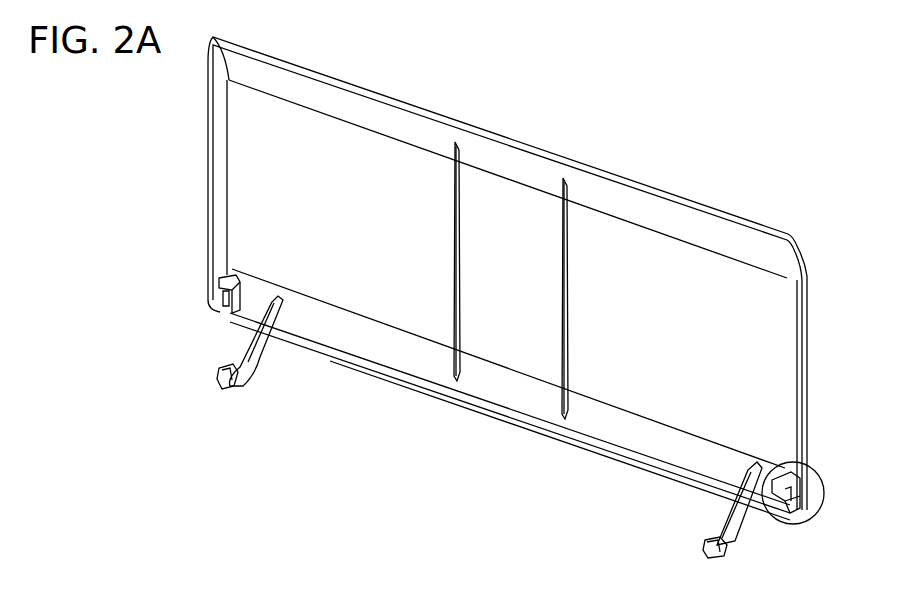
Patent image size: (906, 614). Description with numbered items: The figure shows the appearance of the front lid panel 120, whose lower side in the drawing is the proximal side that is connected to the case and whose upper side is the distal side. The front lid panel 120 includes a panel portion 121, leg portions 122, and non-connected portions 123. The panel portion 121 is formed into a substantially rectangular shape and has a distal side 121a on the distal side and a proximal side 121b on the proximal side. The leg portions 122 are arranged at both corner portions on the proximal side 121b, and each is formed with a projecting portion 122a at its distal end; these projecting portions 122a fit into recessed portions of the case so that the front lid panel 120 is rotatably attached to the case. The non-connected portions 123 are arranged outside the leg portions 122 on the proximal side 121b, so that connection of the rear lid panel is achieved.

The front lid panel 120 is at (580, 105).
The panel portion 121 is at (398, 178).
The distal side 121a is at (642, 177).
The proximal side 121b is at (498, 414).
The leg portions 122 is at (258, 360).
The projecting portion 122a is at (213, 376).
The non-connected portions 123 is at (216, 310).